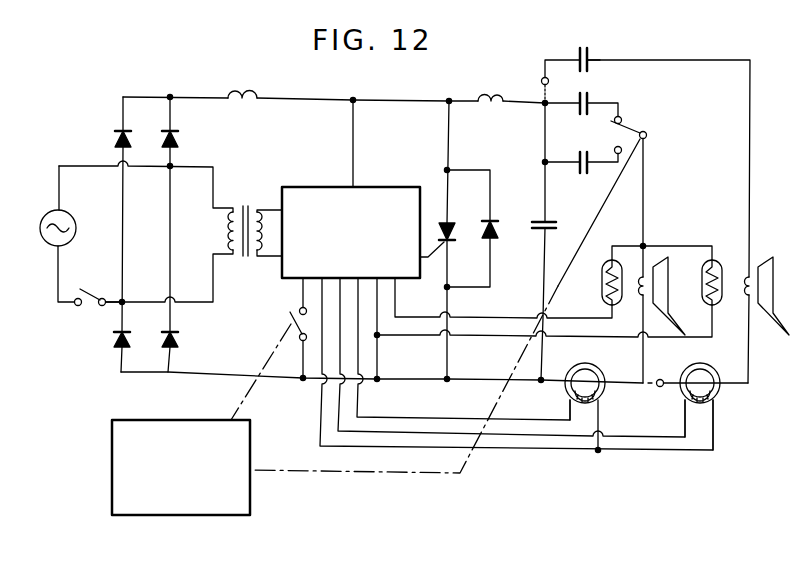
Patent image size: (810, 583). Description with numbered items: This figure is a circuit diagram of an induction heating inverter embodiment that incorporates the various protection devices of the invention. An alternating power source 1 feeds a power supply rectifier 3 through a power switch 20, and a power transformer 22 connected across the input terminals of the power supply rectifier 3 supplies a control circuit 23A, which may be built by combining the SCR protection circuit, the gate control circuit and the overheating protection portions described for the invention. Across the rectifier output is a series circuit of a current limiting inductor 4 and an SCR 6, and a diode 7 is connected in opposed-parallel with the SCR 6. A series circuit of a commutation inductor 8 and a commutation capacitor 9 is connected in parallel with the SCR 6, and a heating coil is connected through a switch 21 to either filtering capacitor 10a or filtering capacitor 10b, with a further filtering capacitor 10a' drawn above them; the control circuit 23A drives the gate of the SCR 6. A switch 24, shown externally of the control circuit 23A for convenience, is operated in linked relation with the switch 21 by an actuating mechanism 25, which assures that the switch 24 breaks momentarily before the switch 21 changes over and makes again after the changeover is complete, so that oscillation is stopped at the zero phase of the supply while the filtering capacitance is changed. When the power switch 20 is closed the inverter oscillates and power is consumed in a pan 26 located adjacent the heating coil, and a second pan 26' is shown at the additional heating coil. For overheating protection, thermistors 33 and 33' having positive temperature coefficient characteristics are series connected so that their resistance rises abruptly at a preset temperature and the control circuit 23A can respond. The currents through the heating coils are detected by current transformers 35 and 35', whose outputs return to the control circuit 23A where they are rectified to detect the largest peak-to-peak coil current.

The AC power source 1 is at (50, 212).
The power supply rectifier 3 is at (111, 141).
The current limiting inductor 4 is at (245, 92).
The SCR 6 is at (454, 229).
The diode 7 is at (496, 226).
The commutation inductor 8 is at (492, 97).
The commutation capacitor 9 is at (558, 222).
The filtering capacitor 10a is at (592, 96).
The capacitor 10a' is at (592, 63).
The filtering capacitor 10b is at (590, 128).
The power switch 20 is at (84, 308).
The switch 21 is at (647, 114).
The power transformer 22 is at (247, 204).
The control circuit 23A is at (323, 186).
The switch 24 is at (288, 326).
The actuating mechanism 25 is at (195, 420).
The pan 26 is at (662, 274).
The flash discharge lamp 26' is at (774, 277).
The thermistor 33 is at (591, 284).
The thermistor 33' is at (718, 259).
The current transformer 35 is at (603, 406).
The current transformer 35' is at (720, 406).